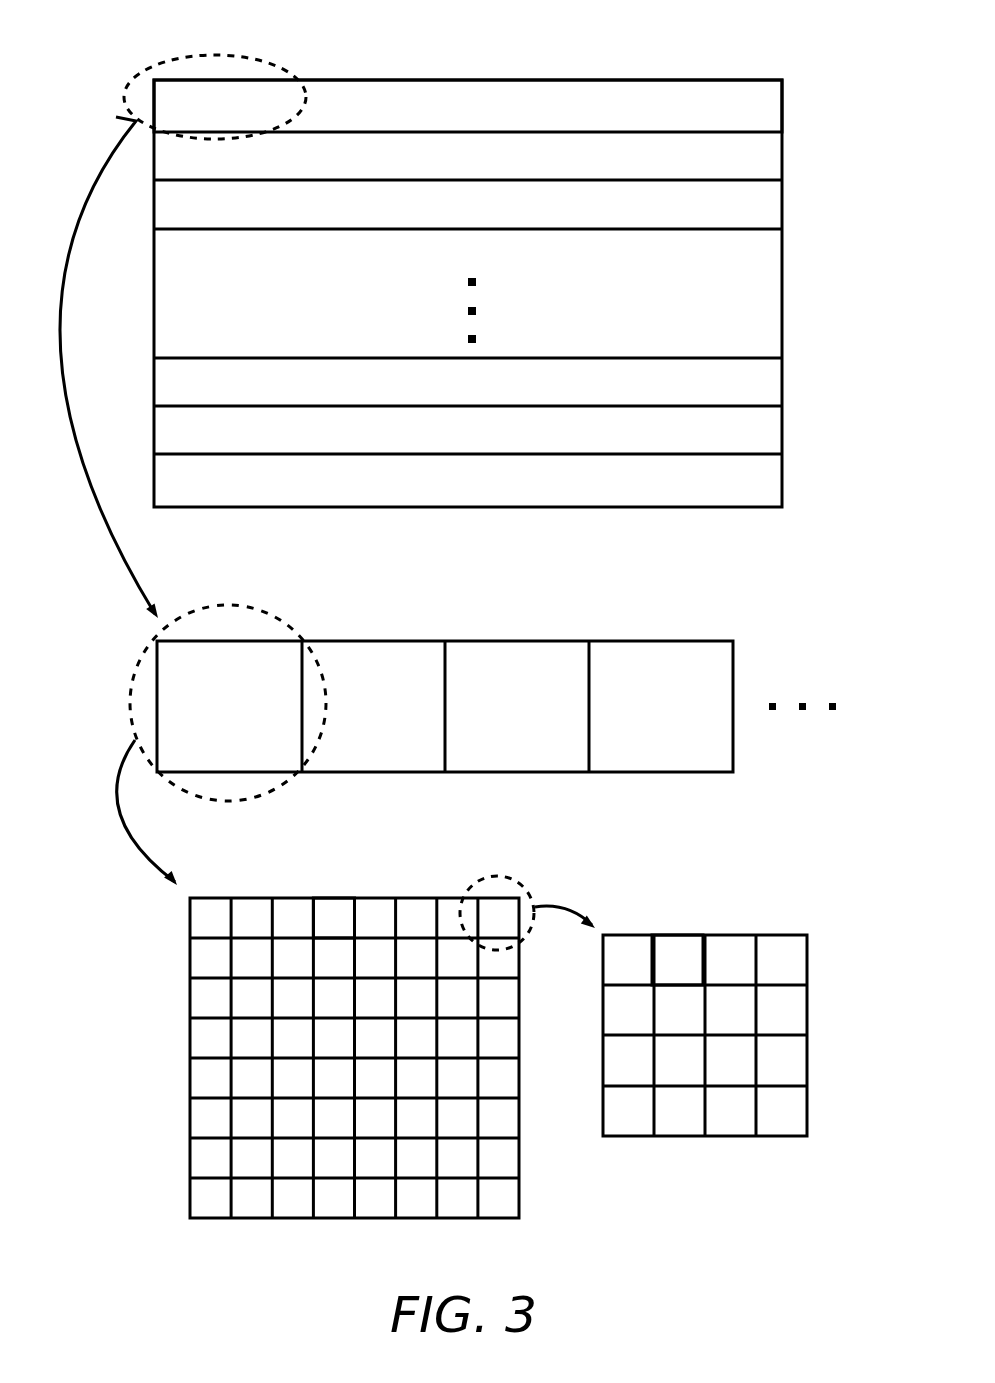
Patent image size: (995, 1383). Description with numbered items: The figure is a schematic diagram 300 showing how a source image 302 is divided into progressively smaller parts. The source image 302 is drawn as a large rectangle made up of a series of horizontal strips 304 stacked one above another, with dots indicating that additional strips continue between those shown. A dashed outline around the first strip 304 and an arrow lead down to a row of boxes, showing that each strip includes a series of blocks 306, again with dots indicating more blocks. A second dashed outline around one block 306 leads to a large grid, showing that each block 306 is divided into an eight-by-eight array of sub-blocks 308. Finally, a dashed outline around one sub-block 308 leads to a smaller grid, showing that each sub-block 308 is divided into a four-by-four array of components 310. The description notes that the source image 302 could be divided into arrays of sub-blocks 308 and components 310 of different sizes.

The diagram 300 is at (138, 34).
The source image 302 is at (587, 80).
The strip 304 is at (765, 110).
The block 306 is at (210, 720).
The sub-block 308 is at (345, 912).
The component 310 is at (672, 948).